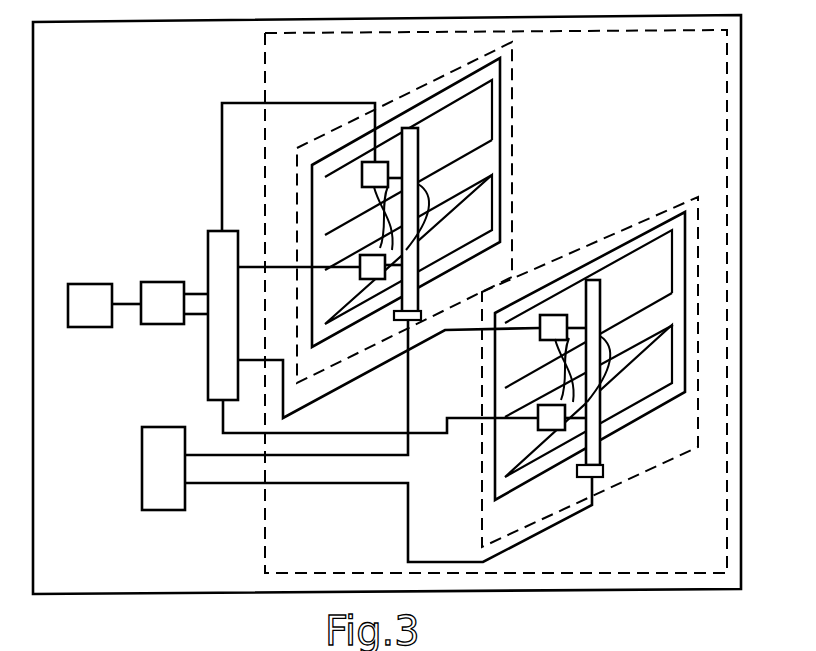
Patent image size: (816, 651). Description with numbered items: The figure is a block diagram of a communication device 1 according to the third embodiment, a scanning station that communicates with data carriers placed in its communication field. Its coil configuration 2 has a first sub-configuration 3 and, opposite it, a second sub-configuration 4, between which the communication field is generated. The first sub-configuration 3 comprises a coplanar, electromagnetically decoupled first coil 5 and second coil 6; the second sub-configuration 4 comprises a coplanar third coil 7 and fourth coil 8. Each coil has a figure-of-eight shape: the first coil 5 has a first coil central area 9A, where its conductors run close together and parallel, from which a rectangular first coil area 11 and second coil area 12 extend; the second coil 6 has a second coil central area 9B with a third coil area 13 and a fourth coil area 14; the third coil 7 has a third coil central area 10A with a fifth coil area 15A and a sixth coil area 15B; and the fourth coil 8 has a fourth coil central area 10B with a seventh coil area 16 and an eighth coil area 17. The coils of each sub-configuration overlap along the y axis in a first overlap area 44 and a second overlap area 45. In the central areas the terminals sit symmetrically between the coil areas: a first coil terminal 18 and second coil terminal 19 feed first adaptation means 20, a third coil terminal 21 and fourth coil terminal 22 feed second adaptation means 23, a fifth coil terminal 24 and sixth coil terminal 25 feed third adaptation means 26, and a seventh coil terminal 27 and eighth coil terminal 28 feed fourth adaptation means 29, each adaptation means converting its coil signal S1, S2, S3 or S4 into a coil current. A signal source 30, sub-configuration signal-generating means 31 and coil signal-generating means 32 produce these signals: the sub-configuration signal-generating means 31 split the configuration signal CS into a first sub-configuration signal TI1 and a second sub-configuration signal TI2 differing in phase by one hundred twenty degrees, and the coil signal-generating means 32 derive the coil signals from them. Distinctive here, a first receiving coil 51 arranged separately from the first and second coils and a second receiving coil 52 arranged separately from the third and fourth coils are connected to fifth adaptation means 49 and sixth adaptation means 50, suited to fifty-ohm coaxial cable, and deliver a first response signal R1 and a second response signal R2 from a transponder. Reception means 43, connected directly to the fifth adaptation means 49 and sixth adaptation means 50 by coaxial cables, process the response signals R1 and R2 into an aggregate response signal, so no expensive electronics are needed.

The communication device 1 is at (275, 596).
The coil configuration 2 is at (264, 553).
The first sub-configuration 3 is at (428, 196).
The second sub-configuration 4 is at (565, 377).
The first coil 5 is at (502, 112).
The second coil 6 is at (478, 252).
The third coil 7 is at (505, 460).
The fourth coil 8 is at (575, 378).
The first coil central area 9A is at (434, 193).
The second coil central area 9B is at (482, 238).
The third coil central area 10A is at (645, 396).
The fourth coil central area 10B is at (614, 338).
The first coil area 11 is at (472, 113).
The second coil area 12 is at (336, 282).
The third coil area 13 is at (336, 184).
The fourth coil area 14 is at (473, 200).
The fifth coil area 15A is at (635, 287).
The sixth coil area 15B is at (528, 448).
The seventh coil area 16 is at (520, 350).
The eighth coil area 17 is at (644, 393).
The first coil terminal 18 is at (441, 221).
The second coil terminal 19 is at (313, 232).
The first adaptation means 20 is at (380, 272).
The third coil terminal 21 is at (419, 171).
The fourth coil terminal 22 is at (394, 204).
The second adaptation means 23 is at (362, 170).
The fifth coil terminal 24 is at (620, 372).
The sixth coil terminal 25 is at (603, 470).
The third adaptation means 26 is at (550, 430).
The seventh coil terminal 27 is at (606, 368).
The eighth coil terminal 28 is at (572, 350).
The fourth adaptation means 29 is at (540, 328).
The signal source 30 is at (93, 300).
The sub-configuration signal-generating means 31 is at (169, 300).
The coil signal-generating means 32 is at (218, 378).
The reception means 43 is at (168, 455).
The first overlap area 44 is at (409, 150).
The second overlap area 45 is at (588, 294).
The fifth adaptation means 49 is at (422, 314).
The sixth adaptation means 50 is at (600, 483).
The first receiving coil 51 is at (512, 78).
The second receiving coil 52 is at (657, 215).
The first coil signal S1 is at (282, 267).
The second coil signal S2 is at (304, 101).
The third coil signal S3 is at (368, 431).
The fourth coil signal S4 is at (345, 385).
The first response signal R1 is at (412, 437).
The second response signal R2 is at (408, 523).
The configuration signal CS is at (127, 303).
The first sub-configuration signal TI1 is at (195, 292).
The second sub-configuration signal TI2 is at (195, 315).